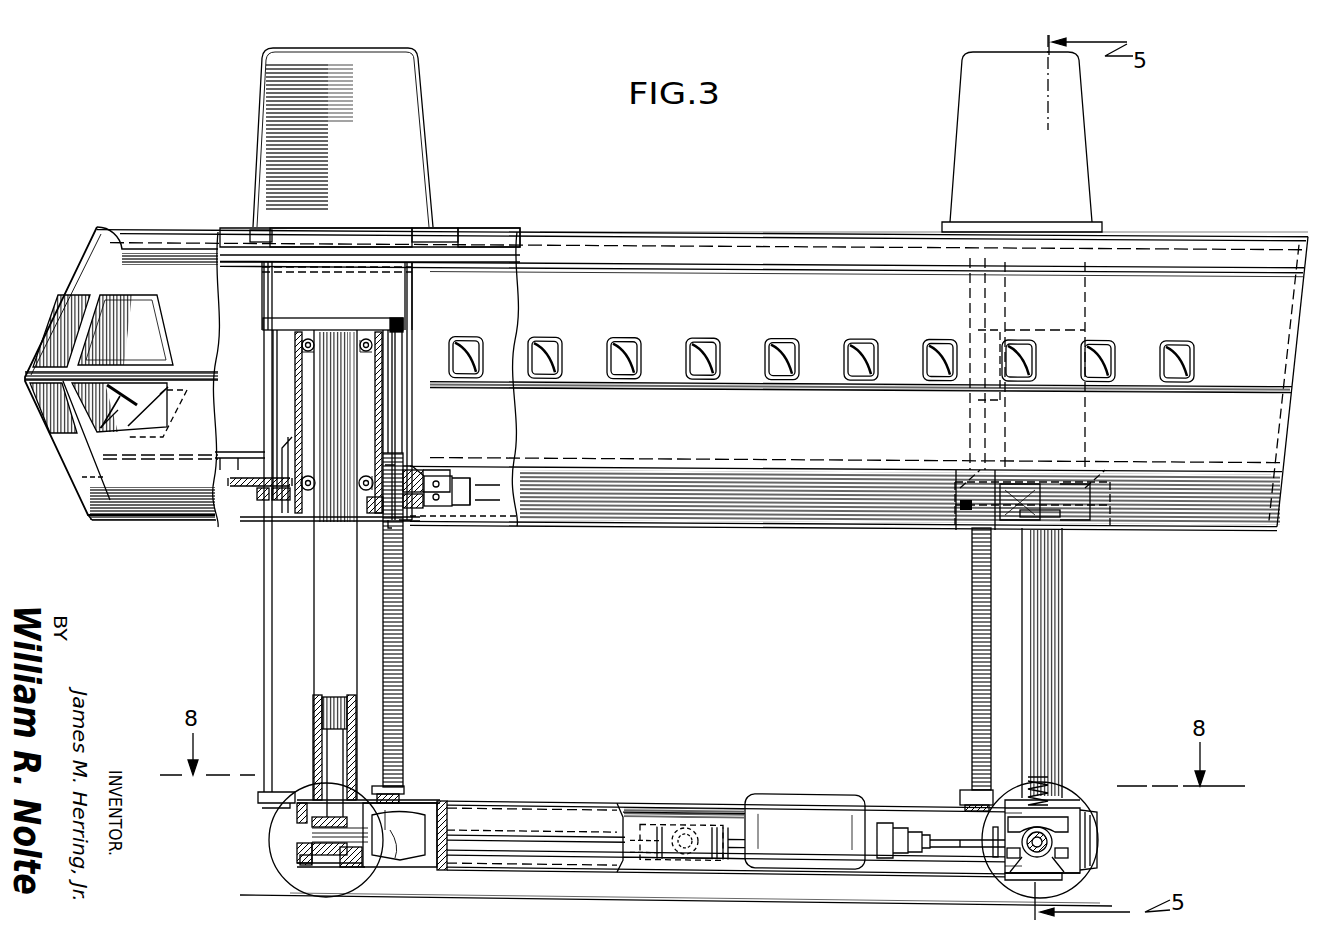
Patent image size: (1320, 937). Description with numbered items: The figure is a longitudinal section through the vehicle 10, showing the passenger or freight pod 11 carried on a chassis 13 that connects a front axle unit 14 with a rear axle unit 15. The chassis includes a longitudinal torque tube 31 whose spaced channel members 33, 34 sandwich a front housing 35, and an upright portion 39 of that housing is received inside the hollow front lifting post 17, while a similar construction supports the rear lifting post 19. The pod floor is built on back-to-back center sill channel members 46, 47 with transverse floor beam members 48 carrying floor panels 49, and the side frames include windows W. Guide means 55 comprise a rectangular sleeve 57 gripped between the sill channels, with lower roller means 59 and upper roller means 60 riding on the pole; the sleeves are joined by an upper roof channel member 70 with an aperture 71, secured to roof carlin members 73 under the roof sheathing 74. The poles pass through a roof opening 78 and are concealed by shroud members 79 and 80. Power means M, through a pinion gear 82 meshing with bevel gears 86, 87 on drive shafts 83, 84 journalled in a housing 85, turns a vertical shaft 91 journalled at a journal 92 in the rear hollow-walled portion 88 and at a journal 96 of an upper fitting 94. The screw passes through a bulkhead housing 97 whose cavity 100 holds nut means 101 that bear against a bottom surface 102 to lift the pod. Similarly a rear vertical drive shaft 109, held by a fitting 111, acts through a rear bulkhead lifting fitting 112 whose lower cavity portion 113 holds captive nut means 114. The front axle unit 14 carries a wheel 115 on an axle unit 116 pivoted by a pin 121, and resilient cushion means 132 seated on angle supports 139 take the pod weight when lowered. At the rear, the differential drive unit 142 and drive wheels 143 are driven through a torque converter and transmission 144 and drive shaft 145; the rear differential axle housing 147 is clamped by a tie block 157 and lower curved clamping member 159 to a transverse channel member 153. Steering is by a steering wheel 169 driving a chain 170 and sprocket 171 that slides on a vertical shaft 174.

The vehicle 10 is at (1164, 184).
The pod 11 is at (706, 226).
The chassis 13 is at (668, 795).
The front axle unit 14 is at (292, 851).
The rear axle unit 15 is at (1100, 840).
The front lifting post 17 is at (313, 596).
The rear lifting post 19 is at (1064, 598).
The longitudinal torque tube 31 is at (570, 782).
The channel member 33 is at (590, 805).
The channel member 34 is at (700, 806).
The front housing 35 is at (293, 861).
The upright portion 39 is at (322, 754).
The channel member 46 is at (504, 510).
The channel member 47 is at (472, 510).
The transverse floor beam member 48 is at (460, 470).
The floor panel 49 is at (238, 462).
The guide means 55 is at (290, 381).
The rectangular sleeve 57 is at (296, 406).
The lower roller means 59 is at (360, 488).
The upper roller means 60 is at (300, 348).
The upper roof channel member 70 is at (512, 232).
The aperture 71 is at (305, 266).
The transverse roof carlin member 73 is at (474, 214).
The roof sheathing 74 is at (478, 236).
The roof opening 78 is at (316, 232).
The shroud member 79 is at (256, 168).
The shroud member 80 is at (960, 148).
The pinion gear 82 is at (686, 862).
The drive shaft 83 is at (540, 838).
The drive shaft 84 is at (740, 860).
The housing 85 is at (638, 860).
The bevel gear 86 is at (662, 860).
The bevel gear 87 is at (714, 860).
The rear hollow-walled portion 88 is at (412, 866).
The vertical shaft 91 is at (404, 626).
The journal 92 is at (400, 797).
The upper fitting 94 is at (345, 318).
The journal 96 is at (397, 318).
The bulkhead housing 97 is at (428, 470).
The cavity 100 is at (382, 520).
The nut means 101 is at (408, 510).
The bottom surface 102 is at (440, 495).
The rear vertical drive shaft 109 is at (972, 659).
The fitting 111 is at (1060, 315).
The rear bulkhead lifting fitting 112 is at (975, 465).
The lower cavity portion 113 is at (1003, 528).
The captive nut means 114 is at (968, 525).
The wheel 115 is at (290, 890).
The axle unit 116 is at (676, 890).
The pin 121 is at (312, 836).
The resilient cushion means 132 is at (1050, 786).
The angle support 139 is at (1060, 518).
The differential drive unit 142 is at (1047, 872).
The drive wheel 143 is at (1095, 790).
The torque converter and transmission 144 is at (905, 860).
The drive shaft 145 is at (950, 862).
The rear differential axle housing 147 is at (1036, 858).
The transverse channel member 153 is at (1097, 817).
The tie block 157 is at (1075, 806).
The lower curved clamping member 159 is at (1012, 870).
The steering wheel 169 is at (100, 428).
The chain 170 is at (232, 500).
The sprocket 171 is at (262, 505).
The vertical shaft 174 is at (266, 650).
The power means M is at (805, 831).
The windows W is at (690, 383).